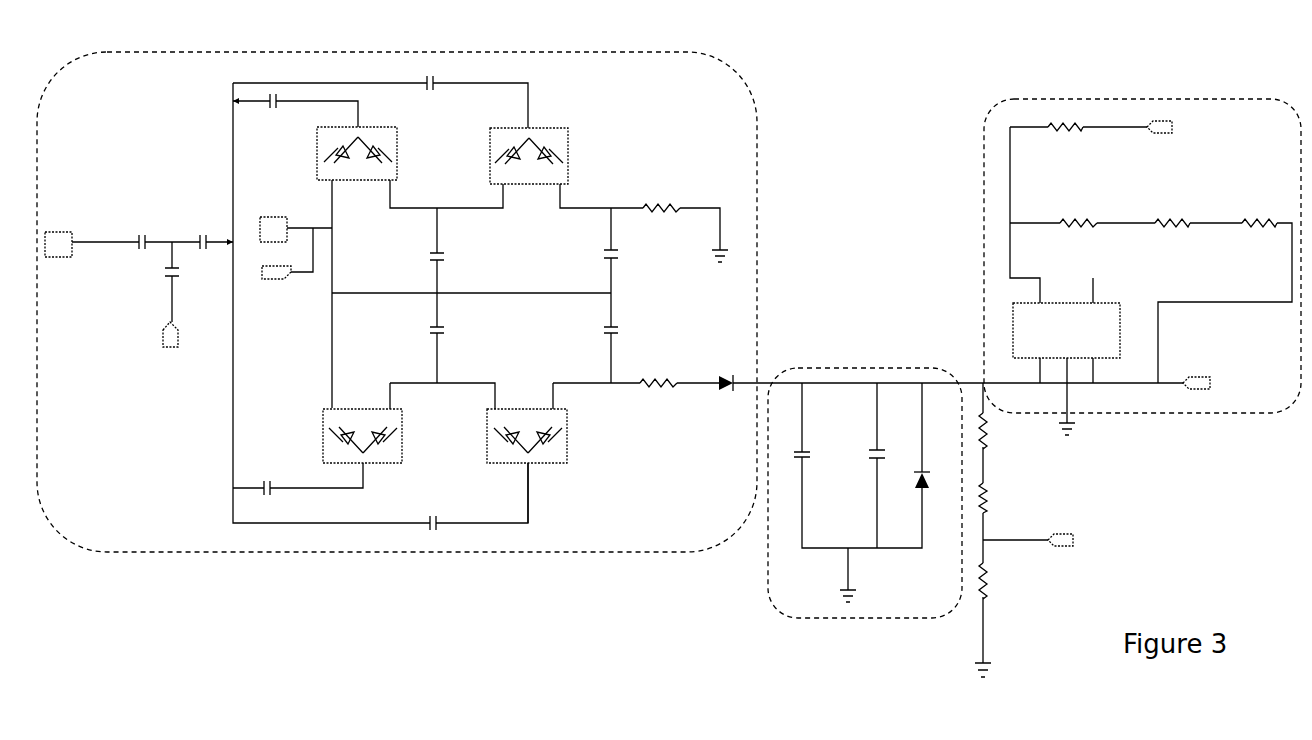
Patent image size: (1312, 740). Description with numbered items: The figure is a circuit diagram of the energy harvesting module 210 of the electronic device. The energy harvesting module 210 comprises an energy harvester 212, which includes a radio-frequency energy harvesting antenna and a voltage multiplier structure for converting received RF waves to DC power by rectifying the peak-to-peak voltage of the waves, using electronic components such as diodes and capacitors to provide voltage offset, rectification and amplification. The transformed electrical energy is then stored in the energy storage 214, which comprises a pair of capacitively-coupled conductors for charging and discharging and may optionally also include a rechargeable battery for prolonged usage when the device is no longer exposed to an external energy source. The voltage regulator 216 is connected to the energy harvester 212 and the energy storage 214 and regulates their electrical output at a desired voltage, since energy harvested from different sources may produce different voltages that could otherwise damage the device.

The energy harvesting module 210 is at (878, 126).
The energy harvester 212 is at (343, 552).
The energy storage 214 is at (803, 620).
The voltage regulator 216 is at (1125, 108).